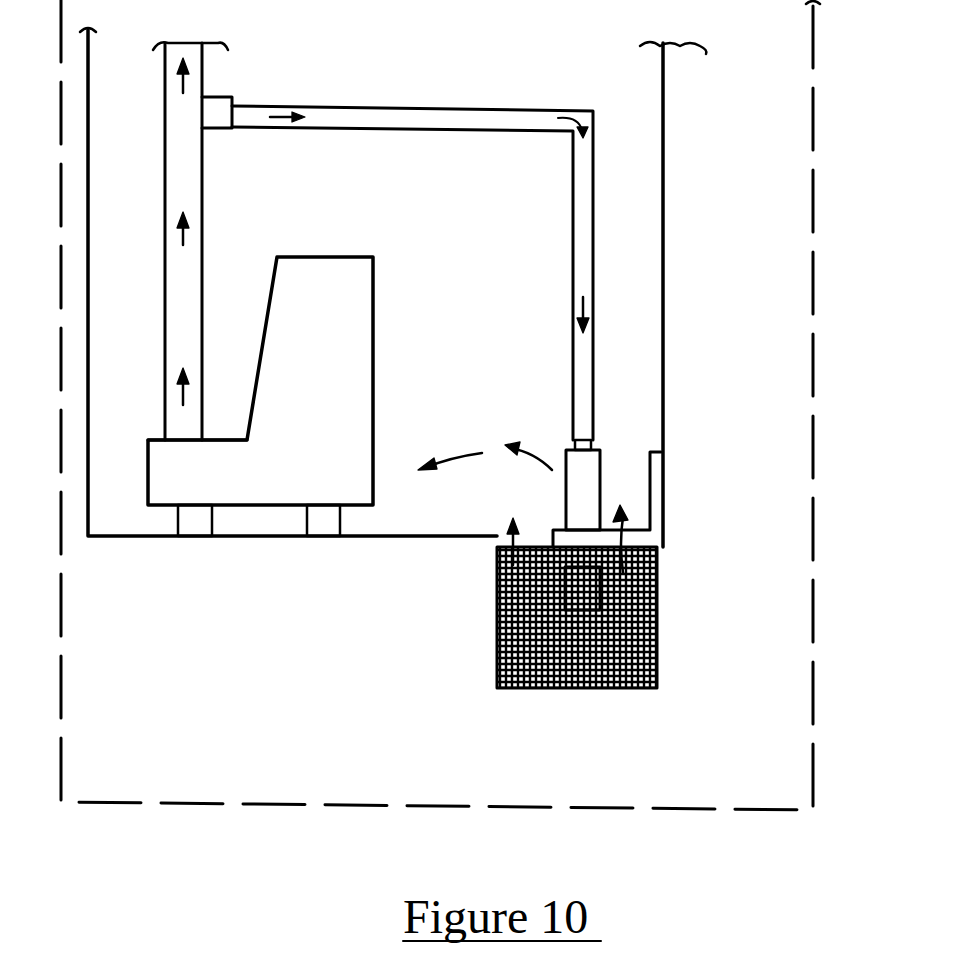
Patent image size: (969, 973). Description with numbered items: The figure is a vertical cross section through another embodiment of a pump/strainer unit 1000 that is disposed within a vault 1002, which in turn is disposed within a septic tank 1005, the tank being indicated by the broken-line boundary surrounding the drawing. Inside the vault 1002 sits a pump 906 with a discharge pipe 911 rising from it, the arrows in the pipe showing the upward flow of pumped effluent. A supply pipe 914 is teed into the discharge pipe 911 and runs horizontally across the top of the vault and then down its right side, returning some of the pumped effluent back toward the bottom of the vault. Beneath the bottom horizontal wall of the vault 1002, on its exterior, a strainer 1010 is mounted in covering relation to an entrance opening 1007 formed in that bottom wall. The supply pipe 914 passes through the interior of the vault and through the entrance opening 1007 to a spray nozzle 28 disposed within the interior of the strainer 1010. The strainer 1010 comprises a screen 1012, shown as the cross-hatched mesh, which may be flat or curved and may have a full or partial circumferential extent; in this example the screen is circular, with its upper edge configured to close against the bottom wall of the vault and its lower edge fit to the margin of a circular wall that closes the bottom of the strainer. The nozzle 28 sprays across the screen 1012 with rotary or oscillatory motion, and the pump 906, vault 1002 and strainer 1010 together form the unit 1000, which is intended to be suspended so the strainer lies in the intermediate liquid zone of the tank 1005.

The septic tank 1005 is at (814, 222).
The vault 1002 is at (664, 281).
The discharge pipe 911 is at (205, 204).
The supply pipe 914 is at (398, 108).
The pump 906 is at (373, 421).
The entrance opening 1007 is at (535, 540).
The screen 1012 is at (497, 654).
The strainer 1010 is at (655, 690).
The spray nozzle 28 is at (565, 590).
The pump/strainer unit 1000 is at (685, 568).